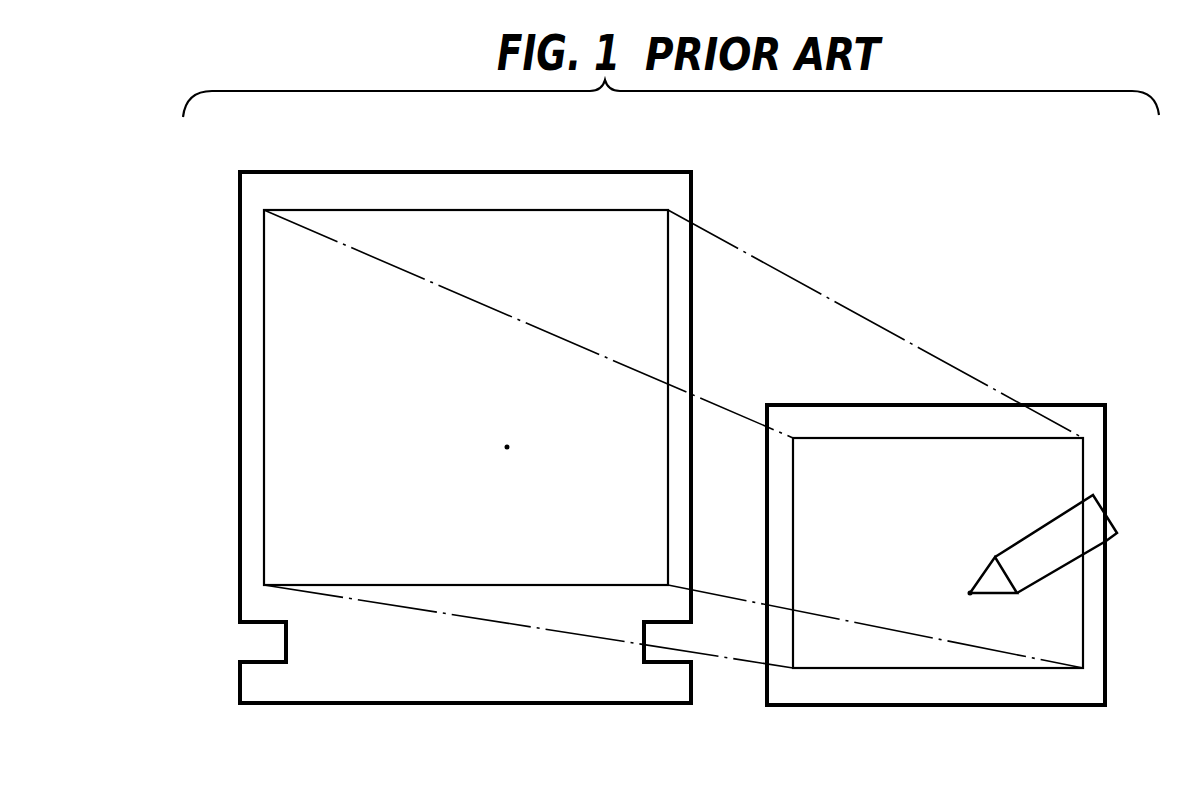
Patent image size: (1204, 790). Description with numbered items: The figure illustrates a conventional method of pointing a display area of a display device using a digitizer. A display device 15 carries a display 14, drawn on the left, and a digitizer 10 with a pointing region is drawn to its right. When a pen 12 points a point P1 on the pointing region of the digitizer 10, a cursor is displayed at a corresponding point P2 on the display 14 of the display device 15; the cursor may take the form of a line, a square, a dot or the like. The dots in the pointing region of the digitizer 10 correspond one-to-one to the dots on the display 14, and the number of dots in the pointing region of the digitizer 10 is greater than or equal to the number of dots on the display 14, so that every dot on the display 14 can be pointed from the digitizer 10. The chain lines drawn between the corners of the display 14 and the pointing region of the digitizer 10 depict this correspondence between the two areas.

The digitizer 10 is at (830, 413).
The pen 12 is at (1050, 524).
The display 14 is at (628, 210).
The display device 15 is at (338, 166).
The point P1 is at (962, 590).
The corresponding point P2 is at (505, 444).